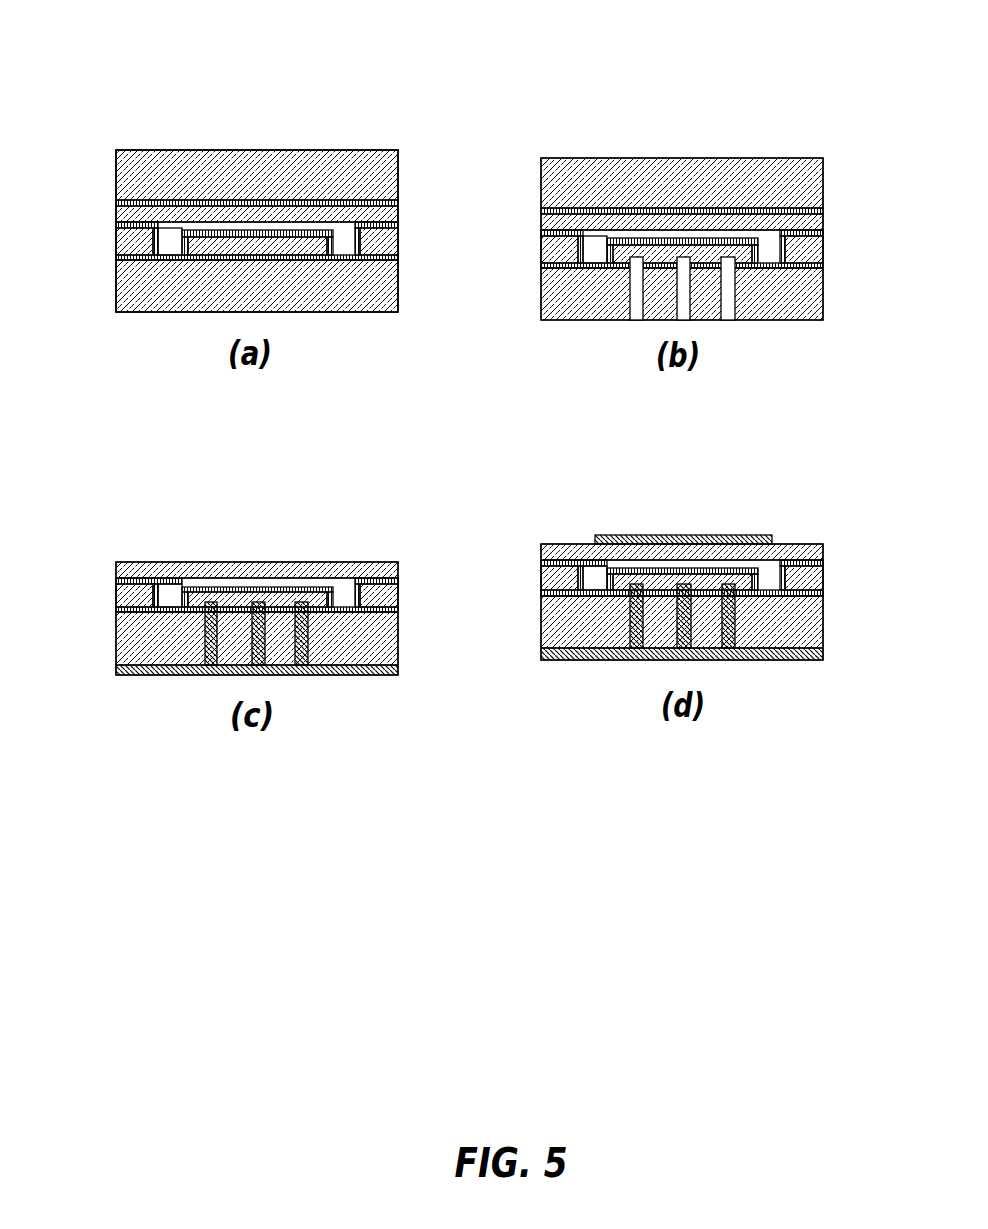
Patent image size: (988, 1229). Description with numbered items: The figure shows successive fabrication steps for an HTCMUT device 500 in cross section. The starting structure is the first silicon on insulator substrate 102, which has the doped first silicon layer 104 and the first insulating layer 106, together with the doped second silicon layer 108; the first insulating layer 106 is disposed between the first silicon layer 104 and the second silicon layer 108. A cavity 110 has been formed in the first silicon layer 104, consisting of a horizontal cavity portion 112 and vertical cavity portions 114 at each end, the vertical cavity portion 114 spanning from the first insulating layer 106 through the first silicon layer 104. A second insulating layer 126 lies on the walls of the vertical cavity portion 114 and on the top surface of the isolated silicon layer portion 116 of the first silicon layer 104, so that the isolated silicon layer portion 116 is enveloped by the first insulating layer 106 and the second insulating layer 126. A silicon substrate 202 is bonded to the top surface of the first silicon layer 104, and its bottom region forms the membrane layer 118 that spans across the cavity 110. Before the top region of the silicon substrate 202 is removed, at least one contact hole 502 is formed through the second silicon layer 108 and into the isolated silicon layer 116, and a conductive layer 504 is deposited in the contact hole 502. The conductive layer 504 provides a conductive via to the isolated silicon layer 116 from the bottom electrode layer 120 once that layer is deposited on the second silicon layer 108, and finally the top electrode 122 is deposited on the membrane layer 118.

The MEMS device 500 is at (130, 82).
The first silicon on insulator (SOI) substrate 102 is at (108, 252).
The first silicon layer 104 is at (399, 245).
The first insulating layer 106 is at (114, 262).
The second silicon layer 108 is at (399, 290).
The cavity 110 is at (174, 240).
The horizontal cavity portion 112 is at (188, 228).
The vertical cavity portion 114 is at (364, 238).
The isolated silicon layer portion 116 is at (243, 238).
The membrane layer 118 is at (328, 204).
The bottom electrode layer 120 is at (160, 676).
The top electrode 122 is at (725, 536).
The second insulating layer 126 is at (284, 230).
The silicon substrate 202 is at (108, 181).
The contact hole 502 is at (736, 292).
The conductive layer 504 is at (302, 638).